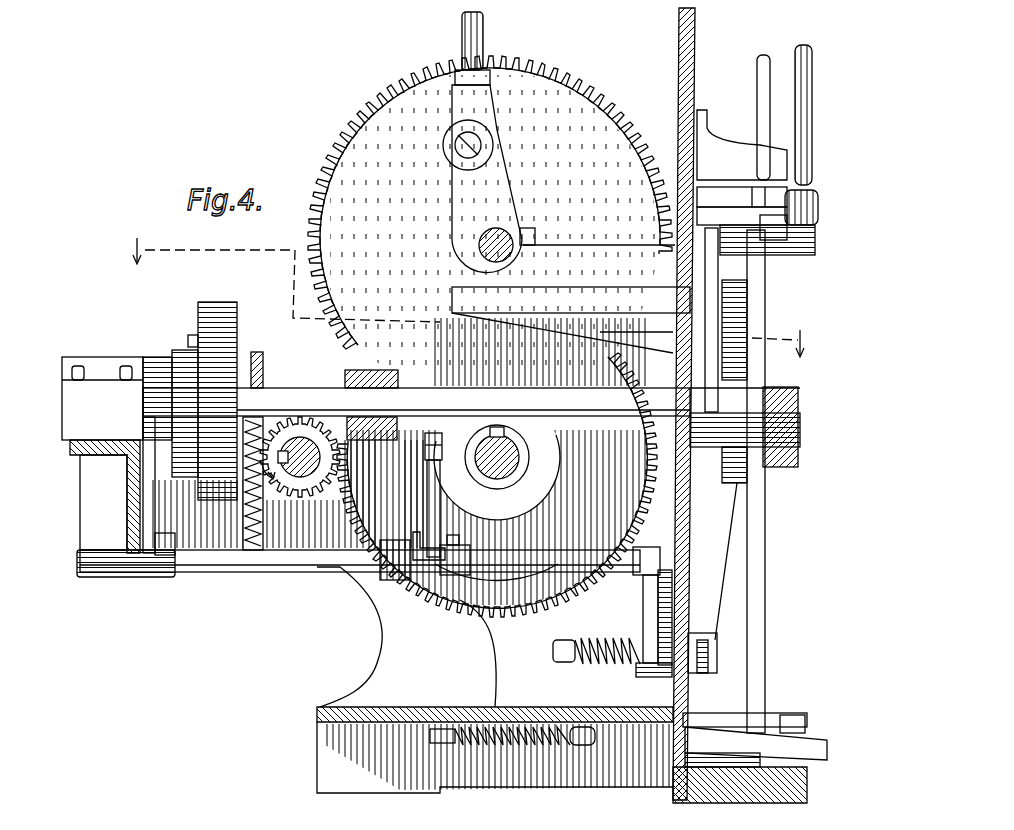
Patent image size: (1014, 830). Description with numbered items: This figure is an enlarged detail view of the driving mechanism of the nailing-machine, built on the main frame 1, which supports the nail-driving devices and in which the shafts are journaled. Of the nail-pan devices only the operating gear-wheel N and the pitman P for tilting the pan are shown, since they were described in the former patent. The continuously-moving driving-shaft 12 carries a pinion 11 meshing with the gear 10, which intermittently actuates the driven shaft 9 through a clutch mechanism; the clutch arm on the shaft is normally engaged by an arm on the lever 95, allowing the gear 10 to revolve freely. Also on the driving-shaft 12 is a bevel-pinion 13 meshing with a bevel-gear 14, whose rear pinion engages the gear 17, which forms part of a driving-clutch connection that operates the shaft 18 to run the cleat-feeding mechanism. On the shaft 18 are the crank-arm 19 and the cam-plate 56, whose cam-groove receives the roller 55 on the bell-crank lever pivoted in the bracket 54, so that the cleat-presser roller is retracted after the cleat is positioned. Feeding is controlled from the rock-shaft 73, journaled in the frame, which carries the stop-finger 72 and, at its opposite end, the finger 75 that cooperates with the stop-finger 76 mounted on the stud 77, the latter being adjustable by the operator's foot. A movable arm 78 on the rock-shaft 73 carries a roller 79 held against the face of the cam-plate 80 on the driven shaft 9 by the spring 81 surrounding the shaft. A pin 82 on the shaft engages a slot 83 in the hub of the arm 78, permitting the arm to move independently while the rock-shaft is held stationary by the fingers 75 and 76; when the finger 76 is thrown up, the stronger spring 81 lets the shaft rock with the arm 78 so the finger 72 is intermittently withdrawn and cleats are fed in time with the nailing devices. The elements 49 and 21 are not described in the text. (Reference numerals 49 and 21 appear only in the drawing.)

The main frame 1 is at (418, 672).
The operating gear-wheel N is at (490, 215).
The pitman P is at (485, 42).
The gear 17 is at (230, 293).
The stop-finger 72 is at (152, 565).
The rock-shaft 73 is at (232, 565).
The shaft 18 is at (471, 417).
The bevel-gear 14 is at (258, 362).
The pinion 11 is at (312, 415).
The driving-shaft 12 is at (300, 443).
The bevel-pinion 13 is at (282, 483).
The gear 10 is at (545, 612).
The driven shaft 9 is at (497, 472).
The cam-plate 80 is at (516, 440).
The crank-arm 19 is at (425, 450).
The movable arm 78 is at (428, 505).
The spring 81 is at (390, 582).
The pin 82 is at (470, 566).
The slot 83 is at (437, 566).
The finger 75 is at (640, 605).
The stop-finger 76 is at (655, 676).
The stud 77 is at (578, 664).
The roller 79 is at (705, 675).
The bracket 54 is at (757, 150).
The roller 55 is at (700, 272).
The cam-plate 56 is at (740, 324).
The bearing 49 is at (800, 410).
The vertical rod 21 is at (760, 602).
The lever 95 is at (790, 740).